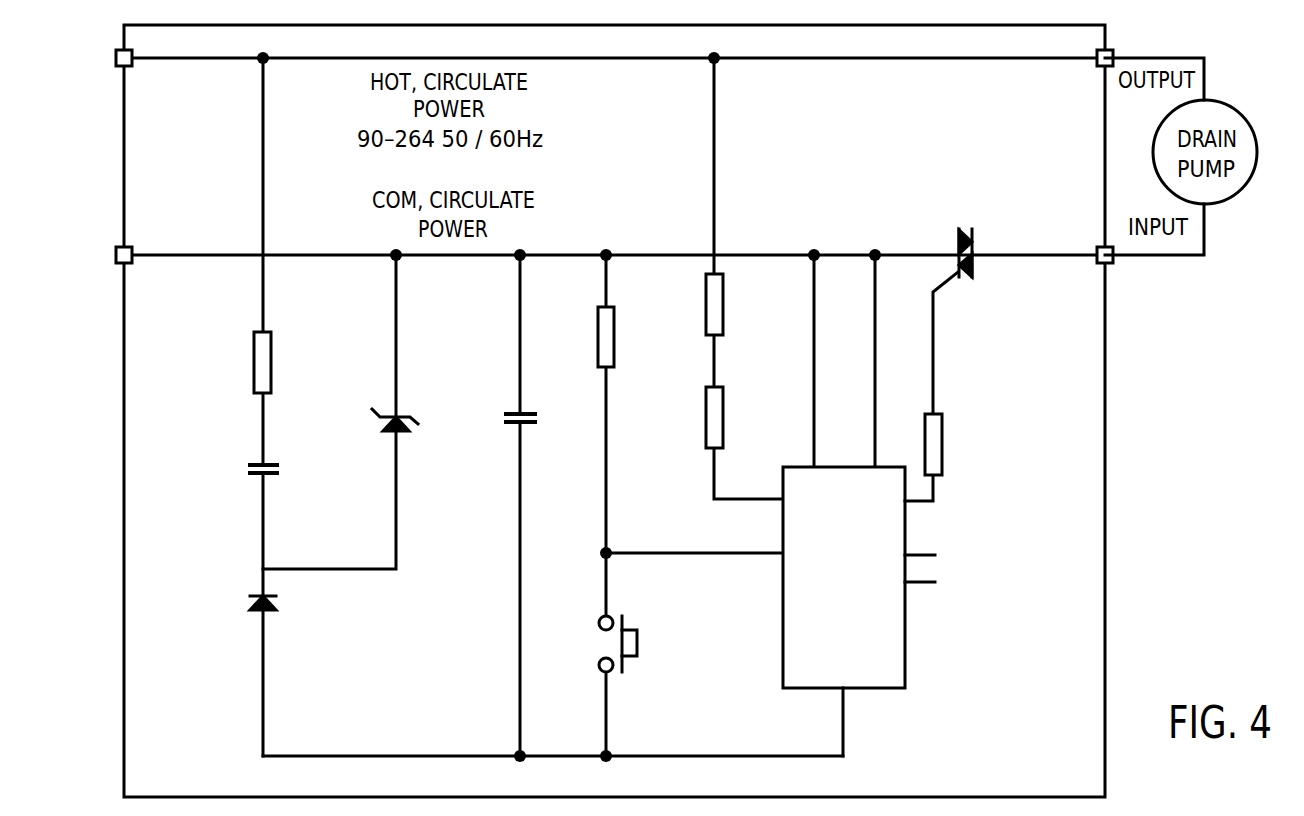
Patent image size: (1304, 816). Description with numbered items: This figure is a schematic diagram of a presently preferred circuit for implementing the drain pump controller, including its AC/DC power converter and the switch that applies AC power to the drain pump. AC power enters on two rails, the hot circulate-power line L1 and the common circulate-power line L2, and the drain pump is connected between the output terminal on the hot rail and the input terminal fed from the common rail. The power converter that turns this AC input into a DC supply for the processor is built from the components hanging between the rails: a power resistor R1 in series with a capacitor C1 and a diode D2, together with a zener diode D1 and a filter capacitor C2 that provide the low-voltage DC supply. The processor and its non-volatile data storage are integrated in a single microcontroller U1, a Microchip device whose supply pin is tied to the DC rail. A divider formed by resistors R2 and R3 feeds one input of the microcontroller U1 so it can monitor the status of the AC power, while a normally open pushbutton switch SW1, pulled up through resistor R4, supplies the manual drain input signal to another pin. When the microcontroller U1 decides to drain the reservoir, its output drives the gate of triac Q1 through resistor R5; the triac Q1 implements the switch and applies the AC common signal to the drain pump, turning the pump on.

The hot line input terminal L1 is at (614, 73).
The common line input terminal L2 is at (614, 239).
The resistor 270 ohm 2W R1 is at (306, 362).
The resistor 1M R2 is at (748, 304).
The resistor 1M R3 is at (748, 417).
The resistor 1M R4 is at (641, 337).
The resistor 330 ohm 1/4W R5 is at (1000, 444).
The capacitor .47 uF 400V C1 is at (218, 479).
The capacitor 220 uF 10V C2 is at (483, 412).
The zener diode 1N173 D1 is at (371, 437).
The diode 1N400 D2 is at (290, 625).
The triac 2N60734 Q1 is at (998, 276).
The microcontroller 12CE518A U1 is at (850, 598).
The normally open pushbutton switch SW1 is at (644, 645).